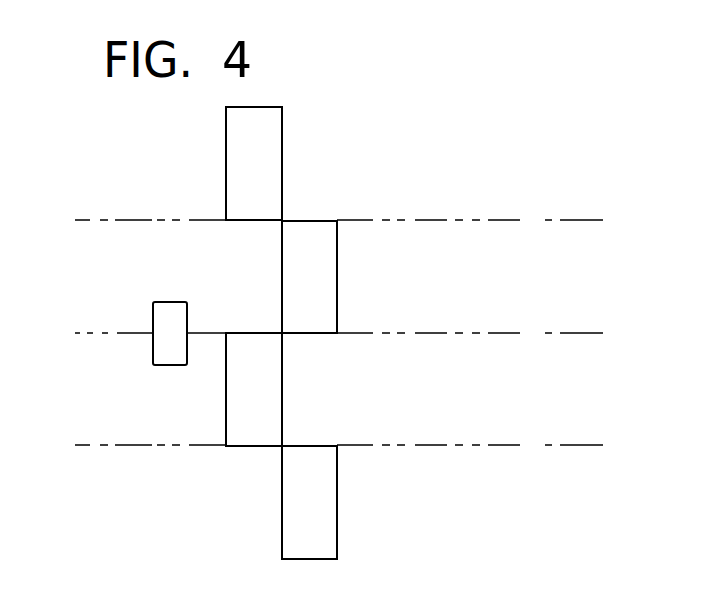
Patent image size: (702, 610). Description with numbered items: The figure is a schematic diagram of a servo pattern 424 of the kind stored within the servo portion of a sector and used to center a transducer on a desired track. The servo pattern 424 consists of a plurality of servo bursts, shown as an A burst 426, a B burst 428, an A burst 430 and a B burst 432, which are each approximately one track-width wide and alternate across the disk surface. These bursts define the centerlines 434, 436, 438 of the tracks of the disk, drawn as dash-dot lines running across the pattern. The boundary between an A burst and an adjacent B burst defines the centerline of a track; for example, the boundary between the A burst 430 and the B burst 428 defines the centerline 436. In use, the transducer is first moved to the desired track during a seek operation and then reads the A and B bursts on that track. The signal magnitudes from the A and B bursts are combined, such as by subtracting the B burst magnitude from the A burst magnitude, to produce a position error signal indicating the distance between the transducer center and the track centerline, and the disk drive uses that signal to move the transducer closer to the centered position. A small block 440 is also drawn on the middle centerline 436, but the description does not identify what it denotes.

The servo pattern 424 is at (337, 100).
The A burst 426 is at (227, 173).
The B burst 428 is at (337, 295).
The A burst 430 is at (227, 413).
The B burst 432 is at (337, 521).
The centerline 434 is at (531, 221).
The centerline 436 is at (531, 333).
The centerline 438 is at (531, 445).
The element 440 is at (153, 319).